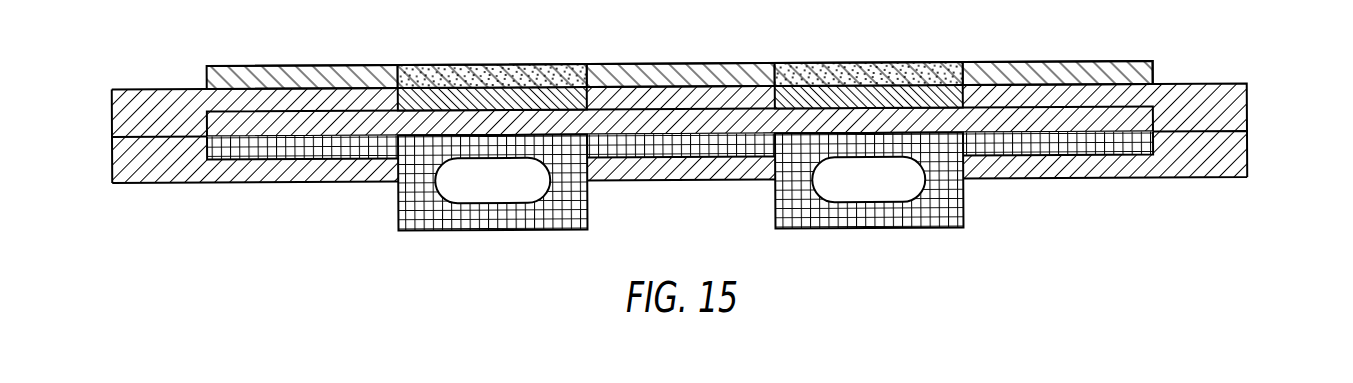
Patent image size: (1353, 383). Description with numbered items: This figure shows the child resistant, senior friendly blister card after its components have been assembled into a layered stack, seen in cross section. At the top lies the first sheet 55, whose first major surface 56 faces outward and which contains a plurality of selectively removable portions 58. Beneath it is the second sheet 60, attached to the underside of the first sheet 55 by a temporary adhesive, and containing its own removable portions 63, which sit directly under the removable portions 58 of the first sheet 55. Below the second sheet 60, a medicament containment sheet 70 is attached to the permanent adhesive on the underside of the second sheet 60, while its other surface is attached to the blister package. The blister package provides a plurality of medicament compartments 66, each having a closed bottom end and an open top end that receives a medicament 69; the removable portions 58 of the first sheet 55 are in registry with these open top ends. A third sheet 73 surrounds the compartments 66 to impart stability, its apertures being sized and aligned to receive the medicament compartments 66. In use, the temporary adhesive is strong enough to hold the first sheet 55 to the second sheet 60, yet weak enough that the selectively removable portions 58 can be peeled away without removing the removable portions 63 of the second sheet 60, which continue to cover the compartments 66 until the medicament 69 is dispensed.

The first sheet 55 is at (1153, 70).
The first major surface 56 is at (303, 66).
The selectively removable portions 58 is at (478, 65).
The second sheet 60 is at (1249, 107).
The removable portions 63 is at (418, 95).
The medicament compartments 66 is at (943, 205).
The medicament 69 is at (844, 188).
The medicament containment sheet 70 is at (1135, 127).
The third sheet 73 is at (1249, 158).